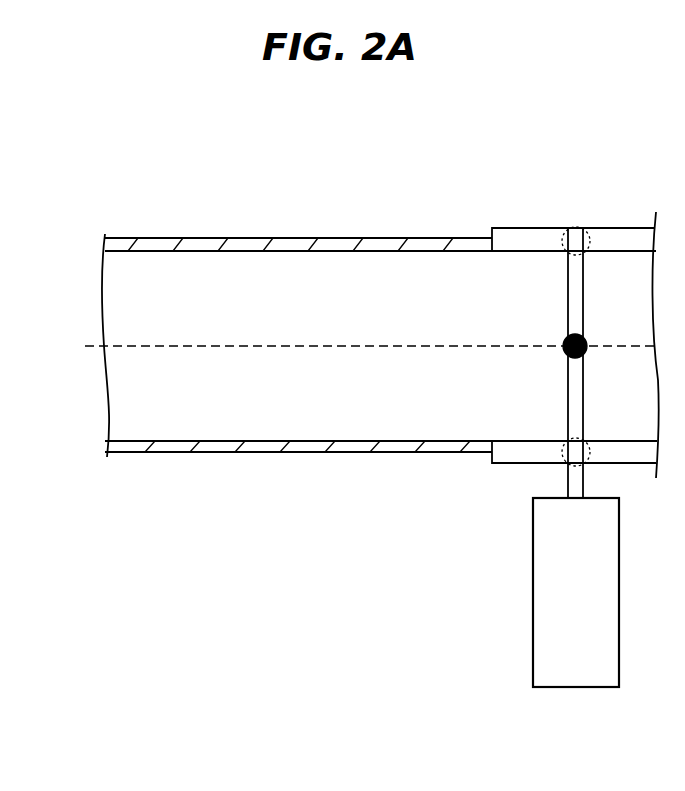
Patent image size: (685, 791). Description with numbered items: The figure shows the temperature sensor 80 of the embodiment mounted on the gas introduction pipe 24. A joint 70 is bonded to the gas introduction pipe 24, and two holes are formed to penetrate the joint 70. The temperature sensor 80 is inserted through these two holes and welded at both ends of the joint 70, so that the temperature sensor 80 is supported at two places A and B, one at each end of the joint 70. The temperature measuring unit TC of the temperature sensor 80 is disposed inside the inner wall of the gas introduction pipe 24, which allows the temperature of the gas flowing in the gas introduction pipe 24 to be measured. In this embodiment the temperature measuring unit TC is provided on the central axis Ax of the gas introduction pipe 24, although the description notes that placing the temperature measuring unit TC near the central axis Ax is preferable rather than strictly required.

The gas introduction pipe 24 is at (392, 452).
The joint 70 is at (505, 463).
The temperature sensor 80 is at (619, 600).
The temperature measuring unit TC is at (585, 341).
The support place A is at (584, 463).
The support place B is at (583, 226).
The central axis Ax is at (356, 347).